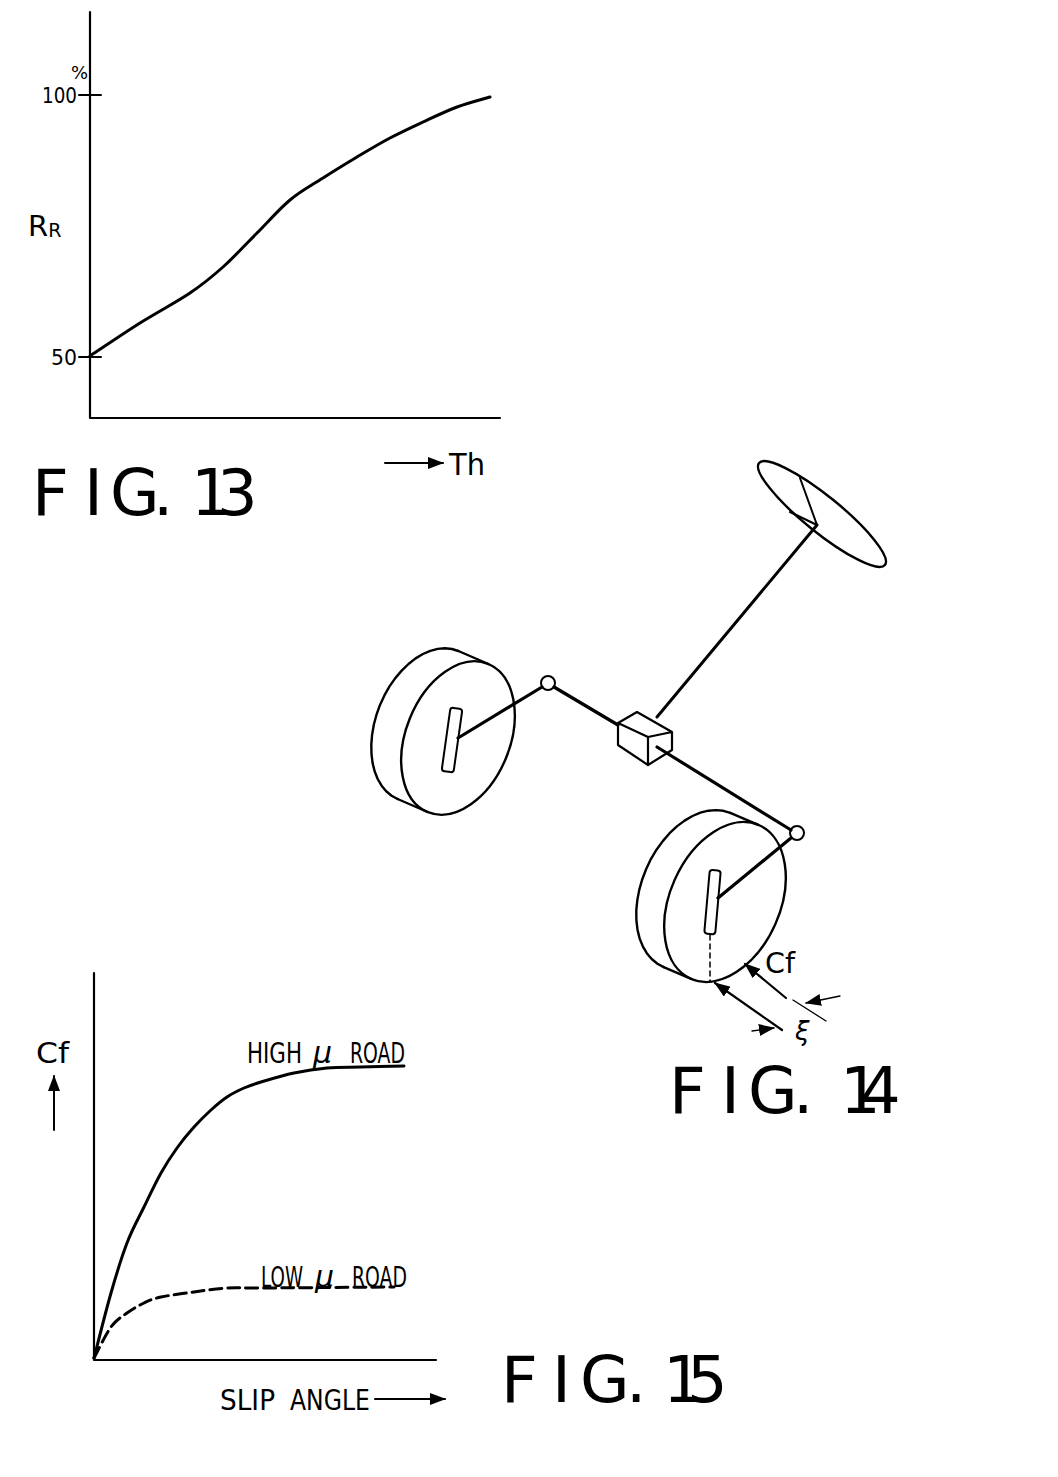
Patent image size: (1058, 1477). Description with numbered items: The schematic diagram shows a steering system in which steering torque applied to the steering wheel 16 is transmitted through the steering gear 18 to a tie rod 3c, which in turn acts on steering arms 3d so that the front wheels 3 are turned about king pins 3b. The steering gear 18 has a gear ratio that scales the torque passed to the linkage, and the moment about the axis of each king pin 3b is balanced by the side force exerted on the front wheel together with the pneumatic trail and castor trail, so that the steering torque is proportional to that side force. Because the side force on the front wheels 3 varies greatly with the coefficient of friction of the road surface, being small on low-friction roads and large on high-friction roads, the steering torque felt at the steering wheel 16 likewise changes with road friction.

The front wheels 3 is at (436, 660).
The king pins 3b is at (450, 770).
The tie rod 3c is at (757, 779).
The steering arms 3d is at (492, 723).
The steering wheel 16 is at (770, 497).
The steering gear 18 is at (637, 712).